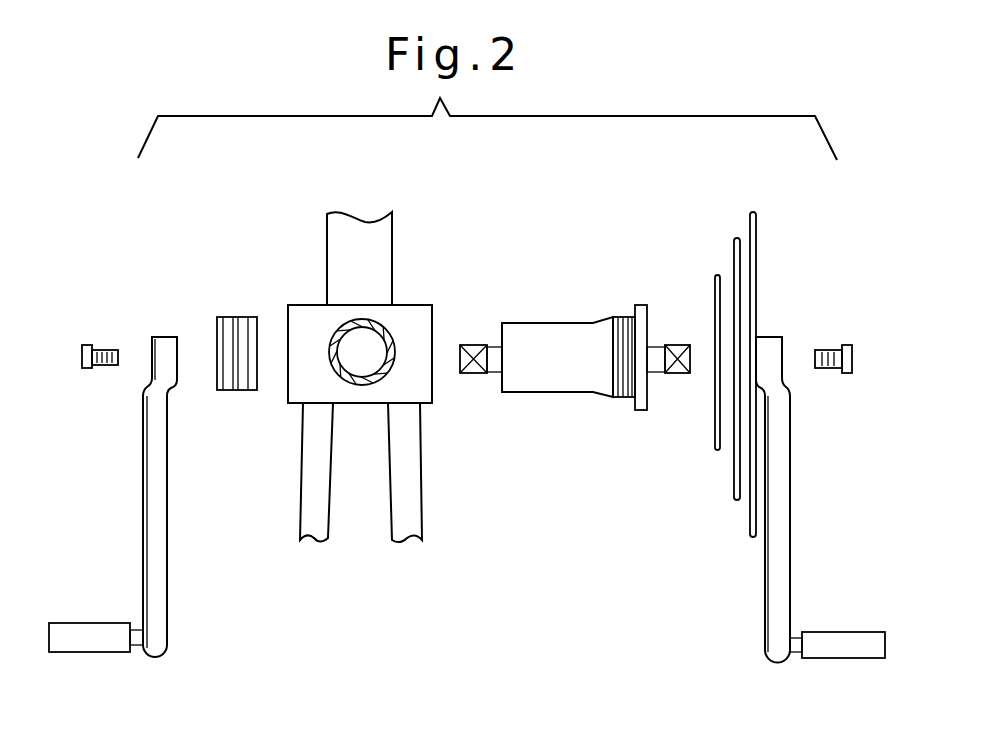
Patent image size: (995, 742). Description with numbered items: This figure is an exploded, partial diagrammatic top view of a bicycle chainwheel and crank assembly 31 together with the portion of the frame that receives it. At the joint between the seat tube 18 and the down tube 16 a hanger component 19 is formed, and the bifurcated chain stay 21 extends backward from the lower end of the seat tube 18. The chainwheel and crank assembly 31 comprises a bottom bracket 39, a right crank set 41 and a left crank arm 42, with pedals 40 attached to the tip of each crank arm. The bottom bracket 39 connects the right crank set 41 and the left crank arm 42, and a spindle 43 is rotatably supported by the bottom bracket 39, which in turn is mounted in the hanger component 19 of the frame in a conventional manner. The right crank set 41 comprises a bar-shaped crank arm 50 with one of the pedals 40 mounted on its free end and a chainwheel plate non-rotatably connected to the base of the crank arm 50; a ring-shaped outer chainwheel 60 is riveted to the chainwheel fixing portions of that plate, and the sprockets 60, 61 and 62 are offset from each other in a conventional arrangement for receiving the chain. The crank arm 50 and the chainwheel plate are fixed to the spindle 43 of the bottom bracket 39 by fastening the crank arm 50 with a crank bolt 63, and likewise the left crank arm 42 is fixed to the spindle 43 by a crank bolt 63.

The down tube 16 is at (393, 242).
The seat tube 18 is at (387, 328).
The hanger component 19 is at (308, 304).
The chain stay 21 is at (302, 497).
The chainwheel and crank assembly 31 is at (681, 219).
The bottom bracket 39 is at (567, 322).
The pedals 40 is at (88, 622).
The right crank set 41 is at (795, 314).
The left crank arm 42 is at (142, 460).
The spindle 43 is at (660, 372).
The crank arm 50 is at (792, 463).
The outer chainwheel 60 is at (753, 212).
The sprocket 61 is at (737, 237).
The sprocket 62 is at (713, 280).
The crank bolt 63 is at (90, 345).